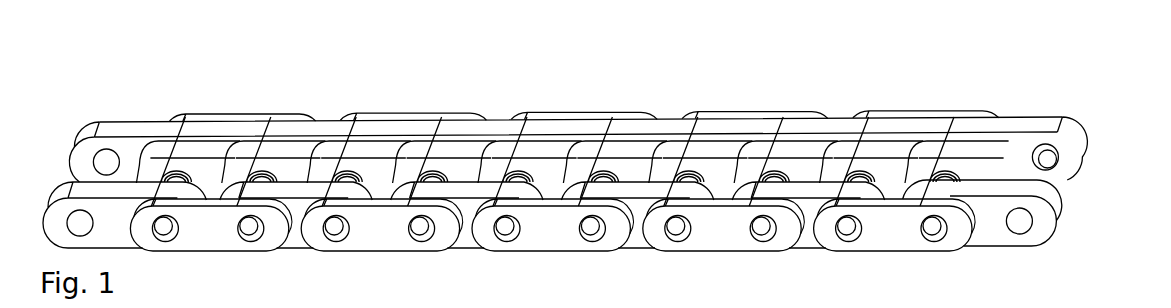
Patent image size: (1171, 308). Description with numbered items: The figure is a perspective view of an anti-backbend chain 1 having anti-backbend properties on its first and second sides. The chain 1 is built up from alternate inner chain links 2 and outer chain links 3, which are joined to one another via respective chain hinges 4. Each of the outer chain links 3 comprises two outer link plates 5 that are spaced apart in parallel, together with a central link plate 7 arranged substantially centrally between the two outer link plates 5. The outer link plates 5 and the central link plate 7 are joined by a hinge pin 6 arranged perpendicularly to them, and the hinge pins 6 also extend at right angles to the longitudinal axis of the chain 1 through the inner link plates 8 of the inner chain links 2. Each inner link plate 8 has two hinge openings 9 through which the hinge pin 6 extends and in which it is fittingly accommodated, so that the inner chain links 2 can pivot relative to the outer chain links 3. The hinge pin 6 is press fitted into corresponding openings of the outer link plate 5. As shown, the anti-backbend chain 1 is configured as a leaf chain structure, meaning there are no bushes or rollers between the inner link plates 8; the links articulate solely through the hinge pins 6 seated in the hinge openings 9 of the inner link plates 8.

The chain 1 is at (845, 95).
The inner chain links 2 is at (318, 128).
The outer chain links 3 is at (237, 108).
The chain hinges 4 is at (950, 242).
The outer link plates 5 is at (390, 122).
The hinge pin 6 is at (932, 230).
The central link plate 7 is at (582, 148).
The inner link plates 8 is at (492, 128).
The hinge openings 9 is at (1047, 160).